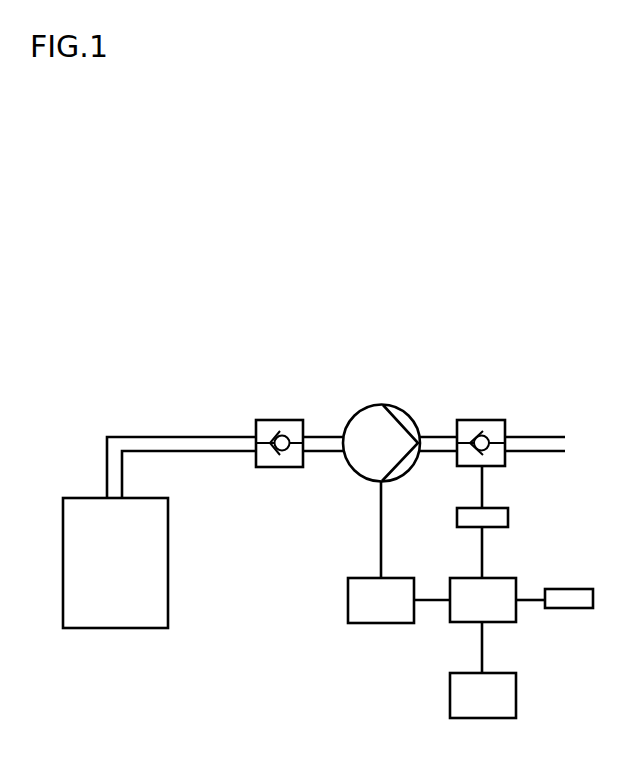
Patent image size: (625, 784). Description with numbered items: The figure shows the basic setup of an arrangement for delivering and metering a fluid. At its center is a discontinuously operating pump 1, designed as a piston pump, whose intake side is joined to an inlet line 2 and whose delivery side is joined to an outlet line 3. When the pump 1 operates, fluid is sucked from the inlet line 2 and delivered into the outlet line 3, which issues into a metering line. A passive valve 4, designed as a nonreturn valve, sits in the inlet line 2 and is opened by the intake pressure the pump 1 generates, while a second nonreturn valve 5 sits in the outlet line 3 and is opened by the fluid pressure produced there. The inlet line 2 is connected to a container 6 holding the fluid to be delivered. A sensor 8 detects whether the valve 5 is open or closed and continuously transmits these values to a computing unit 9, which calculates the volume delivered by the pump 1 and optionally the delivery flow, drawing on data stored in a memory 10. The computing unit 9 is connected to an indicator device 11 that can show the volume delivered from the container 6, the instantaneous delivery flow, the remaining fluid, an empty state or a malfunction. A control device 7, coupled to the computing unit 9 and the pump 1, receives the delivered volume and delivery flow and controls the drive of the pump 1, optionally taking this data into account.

The pump 1 is at (373, 420).
The inlet line 2 is at (199, 437).
The outlet line 3 is at (433, 437).
The passive valve 4 is at (271, 462).
The valve 5 is at (488, 423).
The container 6 is at (120, 580).
The control device 7 is at (355, 609).
The sensor 8 is at (502, 520).
The computing unit 9 is at (458, 617).
The memory 10 is at (558, 595).
The indicator device 11 is at (505, 697).